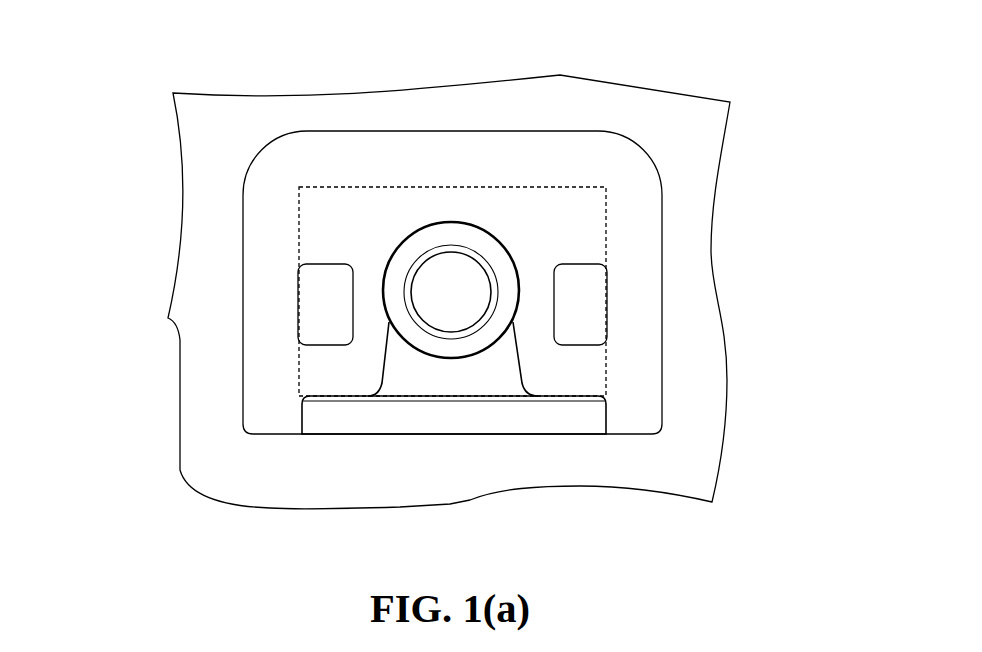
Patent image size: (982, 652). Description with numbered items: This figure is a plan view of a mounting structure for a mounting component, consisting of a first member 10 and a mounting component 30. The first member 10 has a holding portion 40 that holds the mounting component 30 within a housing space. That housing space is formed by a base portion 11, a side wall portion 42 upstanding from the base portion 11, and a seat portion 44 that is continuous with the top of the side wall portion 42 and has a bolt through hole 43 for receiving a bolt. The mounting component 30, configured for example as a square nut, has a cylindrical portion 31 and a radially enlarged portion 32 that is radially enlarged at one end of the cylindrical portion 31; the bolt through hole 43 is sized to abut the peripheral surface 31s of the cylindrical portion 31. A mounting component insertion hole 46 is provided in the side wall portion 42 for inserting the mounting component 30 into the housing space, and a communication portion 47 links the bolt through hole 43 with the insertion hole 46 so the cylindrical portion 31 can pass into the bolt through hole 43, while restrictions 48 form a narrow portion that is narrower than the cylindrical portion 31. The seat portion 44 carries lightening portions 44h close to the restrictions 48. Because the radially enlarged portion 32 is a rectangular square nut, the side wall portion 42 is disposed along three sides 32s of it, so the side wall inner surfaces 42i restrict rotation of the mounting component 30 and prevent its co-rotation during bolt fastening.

The first member 10 is at (327, 63).
The base portion 11 is at (688, 215).
The mounting component 30 is at (434, 291).
The cylindrical portion 31 is at (475, 240).
The peripheral surface 31s is at (412, 237).
The radially enlarged portion 32 is at (434, 437).
The sides 32s is at (409, 185).
The holding portion 40 is at (441, 227).
The side wall portion 42 is at (496, 131).
The side wall inner surfaces 42i is at (445, 212).
The bolt through hole 43 is at (357, 201).
The seat portion 44 is at (445, 254).
The lightening portions 44h is at (313, 322).
The mounting component insertion hole 46 is at (477, 423).
The communication portion 47 is at (428, 378).
The restrictions 48 is at (434, 437).